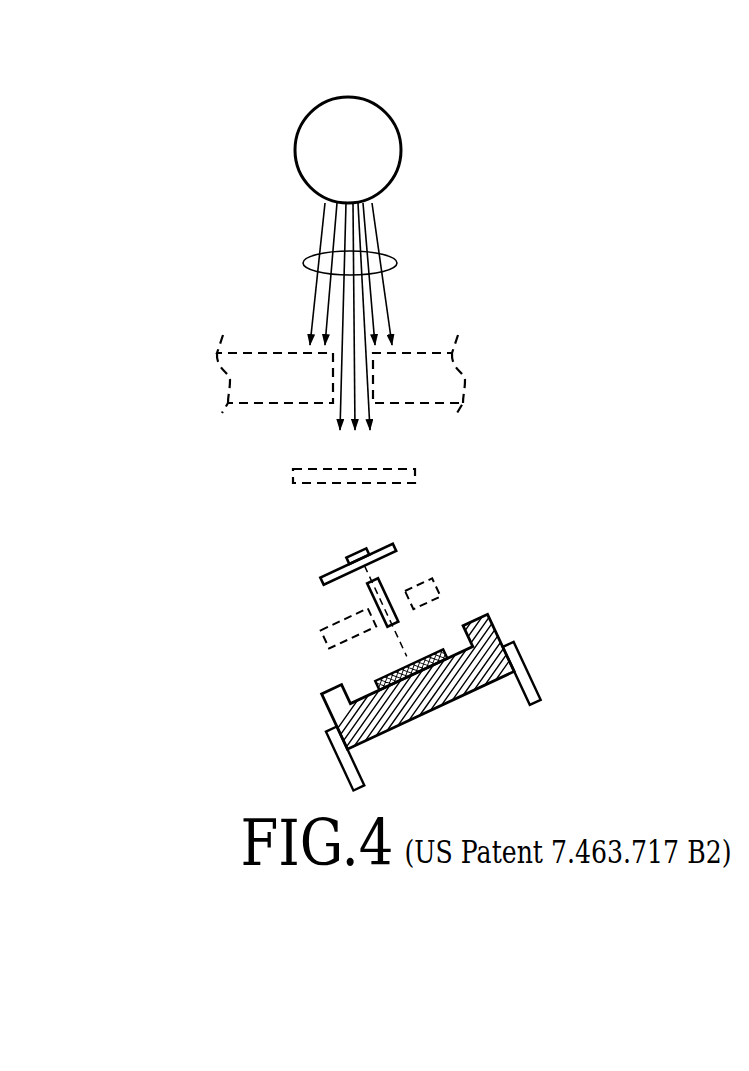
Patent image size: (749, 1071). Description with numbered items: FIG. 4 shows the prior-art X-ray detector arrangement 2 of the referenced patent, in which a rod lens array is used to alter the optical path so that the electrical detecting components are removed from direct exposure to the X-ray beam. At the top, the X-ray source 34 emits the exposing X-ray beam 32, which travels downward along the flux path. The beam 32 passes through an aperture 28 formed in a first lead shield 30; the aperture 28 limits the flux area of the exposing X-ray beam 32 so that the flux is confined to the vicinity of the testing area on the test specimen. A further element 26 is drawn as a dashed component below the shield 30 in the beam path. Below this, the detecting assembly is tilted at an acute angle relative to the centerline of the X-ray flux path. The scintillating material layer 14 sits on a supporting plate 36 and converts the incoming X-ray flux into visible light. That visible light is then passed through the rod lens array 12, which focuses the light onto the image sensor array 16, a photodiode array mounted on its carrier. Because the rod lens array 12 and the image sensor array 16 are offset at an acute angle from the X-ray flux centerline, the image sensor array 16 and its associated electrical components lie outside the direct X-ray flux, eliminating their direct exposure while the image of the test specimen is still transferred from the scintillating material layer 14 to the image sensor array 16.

The optical system 2 is at (228, 118).
The X-ray source 34 is at (397, 121).
The exposing X-ray beam 32 is at (398, 263).
The first lead shield 30 is at (262, 352).
The aperture 28 is at (370, 401).
The filter 26 is at (318, 469).
The scintillating material layer 14 is at (357, 556).
The substrate plate 36 is at (358, 564).
The photodetector chip 12 is at (382, 602).
The image sensor array 16 is at (412, 669).